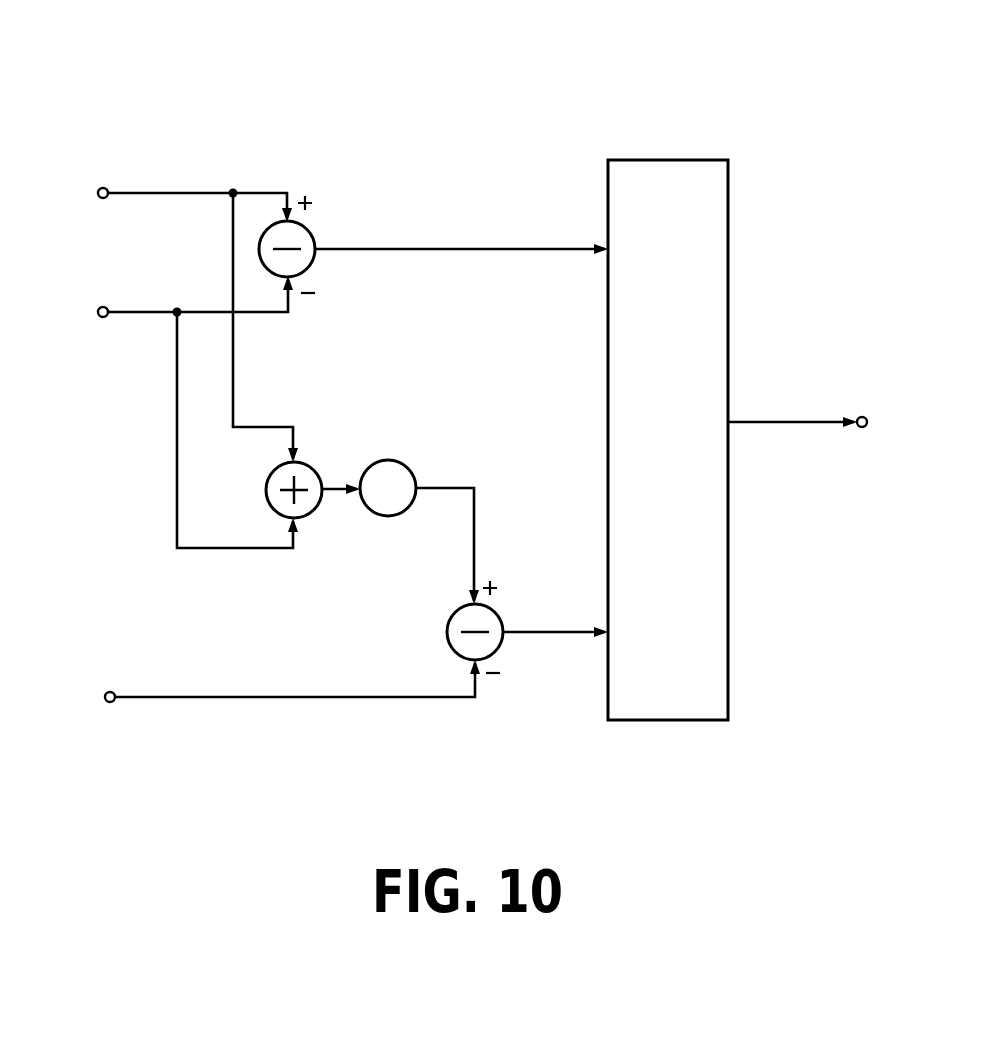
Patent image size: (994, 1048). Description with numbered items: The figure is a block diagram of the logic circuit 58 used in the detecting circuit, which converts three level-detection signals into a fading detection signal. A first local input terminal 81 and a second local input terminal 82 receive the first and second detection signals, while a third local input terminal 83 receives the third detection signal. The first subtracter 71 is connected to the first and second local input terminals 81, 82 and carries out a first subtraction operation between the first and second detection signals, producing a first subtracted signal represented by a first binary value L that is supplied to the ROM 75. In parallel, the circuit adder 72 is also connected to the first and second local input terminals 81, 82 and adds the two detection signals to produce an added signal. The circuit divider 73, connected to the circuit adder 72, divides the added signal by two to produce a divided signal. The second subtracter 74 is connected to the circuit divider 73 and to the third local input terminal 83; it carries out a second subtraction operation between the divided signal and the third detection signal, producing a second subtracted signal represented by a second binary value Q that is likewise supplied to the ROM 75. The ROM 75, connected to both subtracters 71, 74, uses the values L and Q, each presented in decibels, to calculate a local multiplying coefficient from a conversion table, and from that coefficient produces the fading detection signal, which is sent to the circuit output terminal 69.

The logic circuit 58 is at (467, 362).
The first local input terminal 81 is at (102, 188).
The second local input terminal 82 is at (106, 307).
The third local input terminal 83 is at (111, 692).
The first subtracter 71 is at (308, 229).
The circuit adder 72 is at (310, 462).
The circuit divider 73 is at (388, 460).
The second subtracter 74 is at (447, 632).
The read only memory (ROM) 75 is at (730, 272).
The circuit output terminal 69 is at (860, 416).